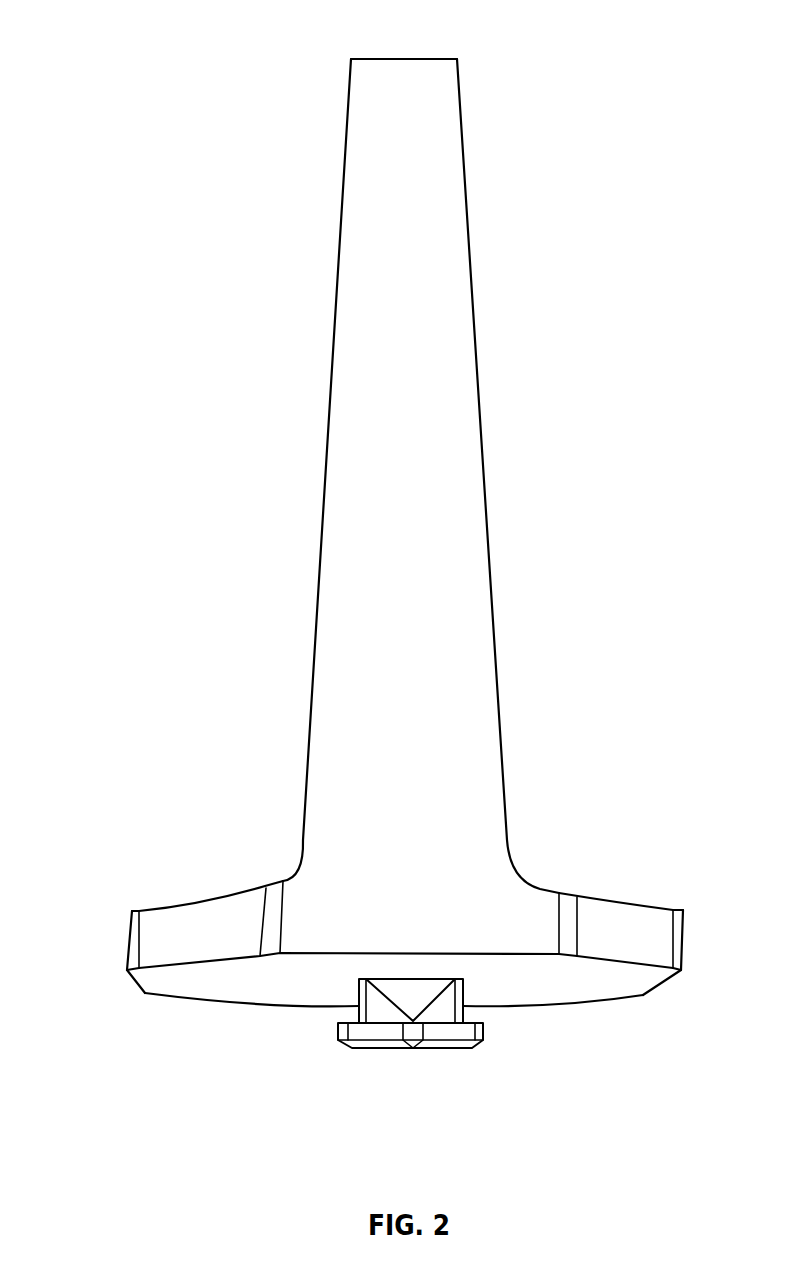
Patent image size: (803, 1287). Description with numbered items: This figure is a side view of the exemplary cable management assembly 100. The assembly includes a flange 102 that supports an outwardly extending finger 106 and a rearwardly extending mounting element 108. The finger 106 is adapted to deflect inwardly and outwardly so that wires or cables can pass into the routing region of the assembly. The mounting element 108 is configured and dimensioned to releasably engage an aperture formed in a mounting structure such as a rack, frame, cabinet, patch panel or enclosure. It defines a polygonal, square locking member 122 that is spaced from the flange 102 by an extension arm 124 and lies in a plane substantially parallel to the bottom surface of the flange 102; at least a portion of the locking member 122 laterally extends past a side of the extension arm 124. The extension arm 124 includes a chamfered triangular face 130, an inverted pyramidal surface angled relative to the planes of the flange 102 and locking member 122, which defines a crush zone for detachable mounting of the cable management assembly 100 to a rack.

The cable management assembly 100 is at (140, 58).
The flange 102 is at (618, 917).
The finger 106 is at (427, 483).
The mounting element 108 is at (442, 1043).
The polygonal locking member 122 is at (384, 1046).
The extension arm 124 is at (442, 995).
The chamfered triangular face 130 is at (397, 983).